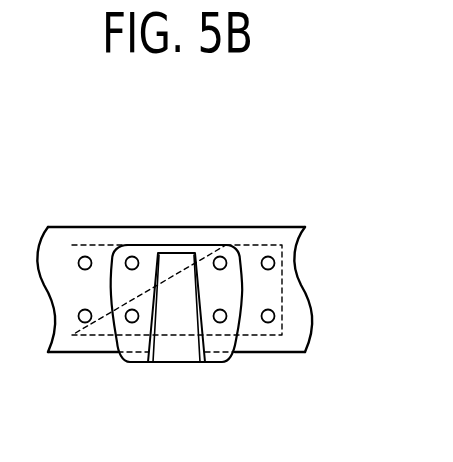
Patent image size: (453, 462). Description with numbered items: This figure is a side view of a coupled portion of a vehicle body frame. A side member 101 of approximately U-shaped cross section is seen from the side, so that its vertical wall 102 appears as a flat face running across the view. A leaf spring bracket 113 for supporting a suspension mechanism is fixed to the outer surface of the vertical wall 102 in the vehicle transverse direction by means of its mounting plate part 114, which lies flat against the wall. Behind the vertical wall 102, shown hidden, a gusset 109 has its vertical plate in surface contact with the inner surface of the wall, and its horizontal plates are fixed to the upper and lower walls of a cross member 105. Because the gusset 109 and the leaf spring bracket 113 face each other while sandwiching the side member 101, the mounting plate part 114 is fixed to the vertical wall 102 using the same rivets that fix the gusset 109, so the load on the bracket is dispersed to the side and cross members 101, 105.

The side member 101 is at (109, 237).
The vertical wall 102 is at (84, 243).
The cross member 105 is at (127, 268).
The gusset 109 is at (267, 240).
The leaf spring bracket 113 is at (182, 242).
The mounting plate part 114 is at (218, 343).